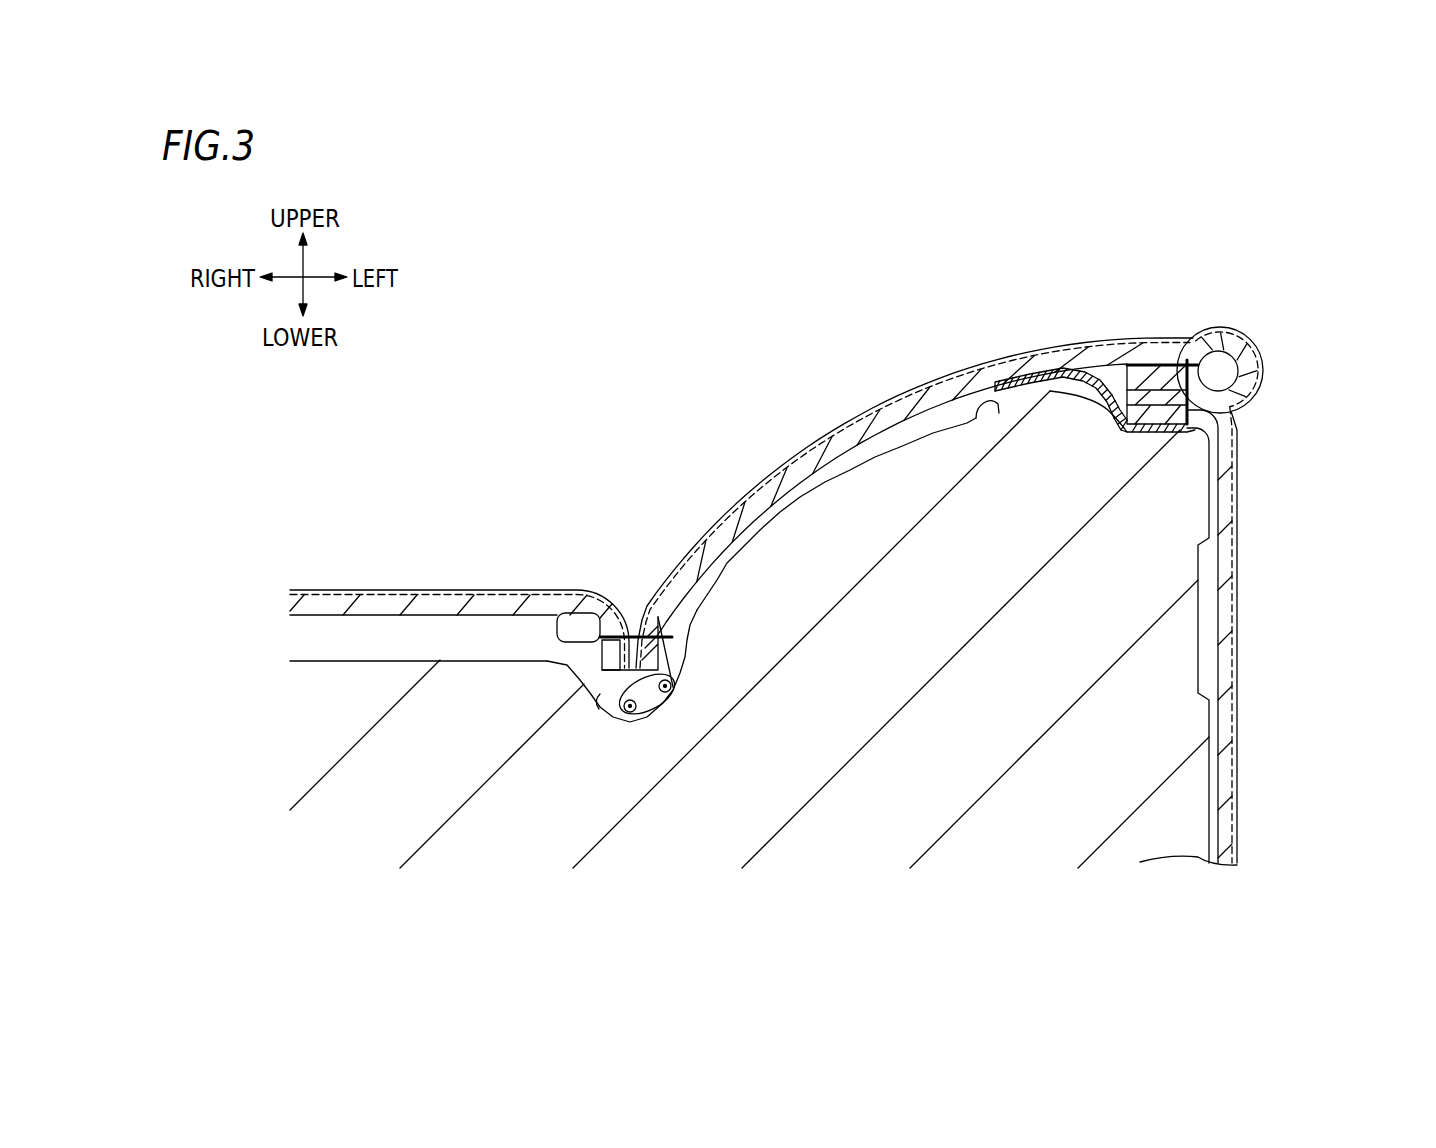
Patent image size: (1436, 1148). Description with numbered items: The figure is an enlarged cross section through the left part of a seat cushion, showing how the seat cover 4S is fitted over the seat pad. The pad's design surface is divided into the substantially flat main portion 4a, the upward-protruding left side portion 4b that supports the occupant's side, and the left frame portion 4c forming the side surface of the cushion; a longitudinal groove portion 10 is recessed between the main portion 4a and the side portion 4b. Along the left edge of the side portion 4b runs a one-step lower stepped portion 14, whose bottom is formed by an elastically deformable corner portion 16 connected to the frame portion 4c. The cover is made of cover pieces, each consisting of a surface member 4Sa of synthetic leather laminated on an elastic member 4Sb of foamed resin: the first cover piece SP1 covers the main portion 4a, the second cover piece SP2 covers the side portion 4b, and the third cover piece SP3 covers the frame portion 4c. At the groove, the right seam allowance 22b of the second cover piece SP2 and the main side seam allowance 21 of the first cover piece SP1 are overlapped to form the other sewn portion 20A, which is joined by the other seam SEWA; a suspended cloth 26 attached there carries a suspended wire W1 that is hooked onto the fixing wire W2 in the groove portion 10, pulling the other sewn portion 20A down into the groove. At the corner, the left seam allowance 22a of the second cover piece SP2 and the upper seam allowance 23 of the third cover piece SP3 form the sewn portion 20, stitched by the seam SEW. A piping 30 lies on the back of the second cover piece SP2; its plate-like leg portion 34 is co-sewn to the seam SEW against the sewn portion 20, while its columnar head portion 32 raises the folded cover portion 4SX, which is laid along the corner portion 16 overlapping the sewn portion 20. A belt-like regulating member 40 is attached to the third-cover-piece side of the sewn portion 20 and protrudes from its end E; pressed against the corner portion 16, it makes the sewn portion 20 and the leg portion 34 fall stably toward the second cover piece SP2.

The main portion 4a is at (322, 661).
The side portion 4b is at (753, 541).
The frame portion 4c is at (1203, 634).
The seat cover 4S is at (849, 587).
The surface member 4Sa is at (797, 455).
The elastic member 4Sb is at (832, 450).
The cover portion 4SX is at (1257, 338).
The first cover piece SP1 is at (457, 591).
The second cover piece SP2 is at (882, 402).
The third cover piece SP3 is at (1263, 758).
The seam SEW is at (1186, 360).
The other seam SEWA is at (598, 642).
The longitudinal groove portion 10 is at (597, 703).
The stepped portion 14 is at (1168, 400).
The corner portion 16 is at (1180, 436).
The sewn portion 20 is at (1075, 349).
The other sewn portion 20A is at (519, 688).
The main side seam allowance 21 is at (600, 650).
The left seam allowance 22a is at (1095, 400).
The right seam allowance 22b is at (611, 655).
The upper seam allowance 23 is at (1133, 368).
The suspended cloth 26 is at (680, 670).
The piping 30 is at (1237, 382).
The head portion 32 is at (1221, 366).
The leg portion 34 is at (1142, 367).
The regulating member 40 is at (1021, 391).
The end of the sewn portion E is at (1092, 408).
The suspended wire W1 is at (669, 703).
The fixing wire W2 is at (628, 712).